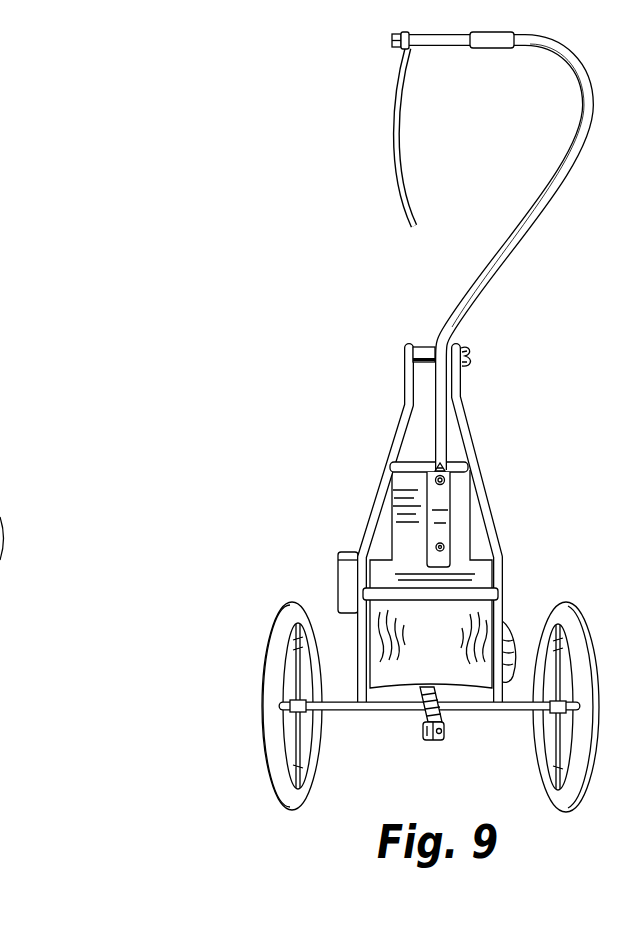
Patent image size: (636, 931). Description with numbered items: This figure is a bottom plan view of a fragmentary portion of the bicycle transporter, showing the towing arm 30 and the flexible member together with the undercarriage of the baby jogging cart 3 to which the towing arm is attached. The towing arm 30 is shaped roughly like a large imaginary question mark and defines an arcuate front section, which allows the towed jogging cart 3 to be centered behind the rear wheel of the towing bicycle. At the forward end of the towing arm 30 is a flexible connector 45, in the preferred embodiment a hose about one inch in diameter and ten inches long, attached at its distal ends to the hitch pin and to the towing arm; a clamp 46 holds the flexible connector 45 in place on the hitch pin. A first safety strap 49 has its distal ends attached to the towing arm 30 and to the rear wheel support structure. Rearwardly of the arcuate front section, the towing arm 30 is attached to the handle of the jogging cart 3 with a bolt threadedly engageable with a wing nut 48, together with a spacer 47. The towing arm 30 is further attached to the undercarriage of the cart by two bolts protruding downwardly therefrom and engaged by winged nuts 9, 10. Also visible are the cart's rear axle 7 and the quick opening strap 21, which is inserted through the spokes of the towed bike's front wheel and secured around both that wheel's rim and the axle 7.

The baby jogging cart 3 is at (394, 446).
The rear axle 7 is at (372, 709).
The winged nut 9 is at (444, 480).
The winged nut 10 is at (446, 545).
The quick opening strap 21 is at (444, 720).
The towing arm 30 is at (533, 232).
The flexible connector 45 is at (443, 47).
The clamp 46 is at (391, 40).
The spacer 47 is at (428, 345).
The wing nut 48 is at (472, 357).
The first safety strap 49 is at (398, 92).